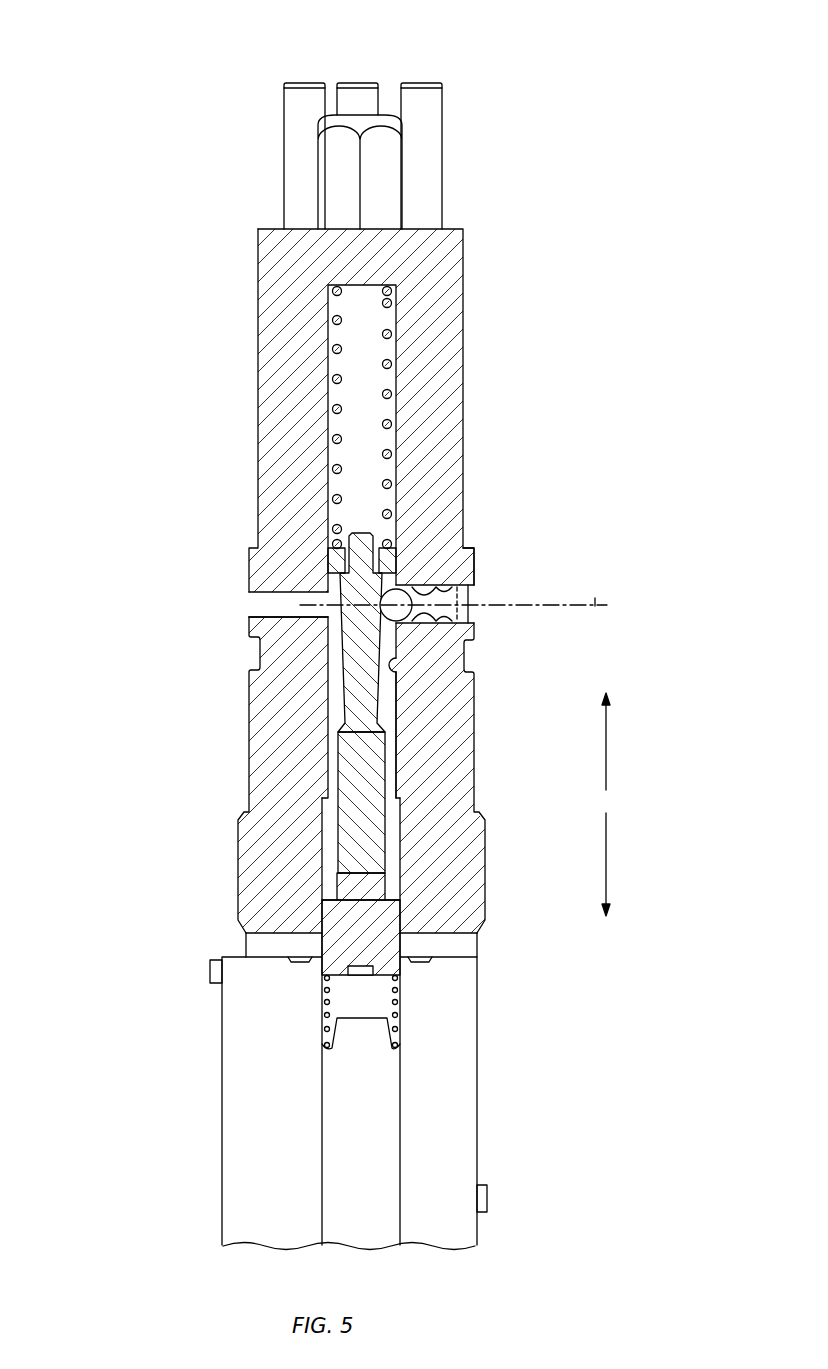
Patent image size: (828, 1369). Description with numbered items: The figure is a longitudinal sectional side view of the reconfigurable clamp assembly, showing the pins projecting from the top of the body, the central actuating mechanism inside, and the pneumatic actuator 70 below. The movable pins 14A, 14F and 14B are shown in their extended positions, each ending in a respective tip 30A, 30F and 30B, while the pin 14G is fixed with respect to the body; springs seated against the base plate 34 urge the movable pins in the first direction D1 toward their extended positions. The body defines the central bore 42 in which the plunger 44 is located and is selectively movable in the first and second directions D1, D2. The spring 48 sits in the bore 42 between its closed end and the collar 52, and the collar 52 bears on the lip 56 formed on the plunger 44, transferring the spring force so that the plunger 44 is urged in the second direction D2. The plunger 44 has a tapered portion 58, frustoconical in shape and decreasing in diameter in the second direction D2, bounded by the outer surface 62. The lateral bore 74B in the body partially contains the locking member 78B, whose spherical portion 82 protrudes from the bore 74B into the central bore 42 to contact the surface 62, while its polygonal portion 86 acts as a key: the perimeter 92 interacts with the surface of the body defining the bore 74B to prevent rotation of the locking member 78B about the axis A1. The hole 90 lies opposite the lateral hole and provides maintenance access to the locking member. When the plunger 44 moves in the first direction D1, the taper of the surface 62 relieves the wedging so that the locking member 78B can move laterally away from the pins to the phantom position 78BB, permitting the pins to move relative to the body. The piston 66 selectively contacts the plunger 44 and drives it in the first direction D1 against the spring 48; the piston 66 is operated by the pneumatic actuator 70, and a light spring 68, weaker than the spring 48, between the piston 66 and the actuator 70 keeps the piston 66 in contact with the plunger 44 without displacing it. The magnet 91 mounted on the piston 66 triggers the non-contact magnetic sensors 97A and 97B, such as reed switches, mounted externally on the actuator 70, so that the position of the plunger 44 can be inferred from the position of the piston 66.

The pin 14A is at (355, 100).
The pin 14F is at (302, 162).
The pin 14B is at (427, 157).
The pin 14G is at (387, 143).
The tip 30A is at (358, 82).
The tip 30F is at (303, 83).
The tip 30B is at (420, 82).
The spring 48 is at (387, 395).
The collar 52 is at (390, 563).
The lip 56 is at (337, 568).
The outer surface 62 is at (360, 605).
The tapered portion 58 is at (367, 673).
The piston 66 is at (335, 887).
The base plate 34 is at (477, 945).
The magnet 91 is at (373, 972).
The hole 90 is at (290, 616).
The locking member phantom position 78BB is at (327, 617).
The bore 74B is at (476, 593).
The polygonal portion 86 is at (468, 612).
The locking member 78B is at (468, 617).
The spherical portion 82 is at (407, 627).
The central bore 42 is at (397, 673).
The plunger 44 is at (385, 767).
The perimeter 92 is at (468, 567).
The axis A1 is at (595, 598).
The first direction D1 is at (606, 750).
The second direction D2 is at (606, 855).
The pneumatic actuator 70 is at (477, 1100).
The light spring 68 is at (327, 1002).
The non-contact magnetic sensor 97A is at (210, 973).
The non-contact magnetic sensor 97B is at (487, 1197).